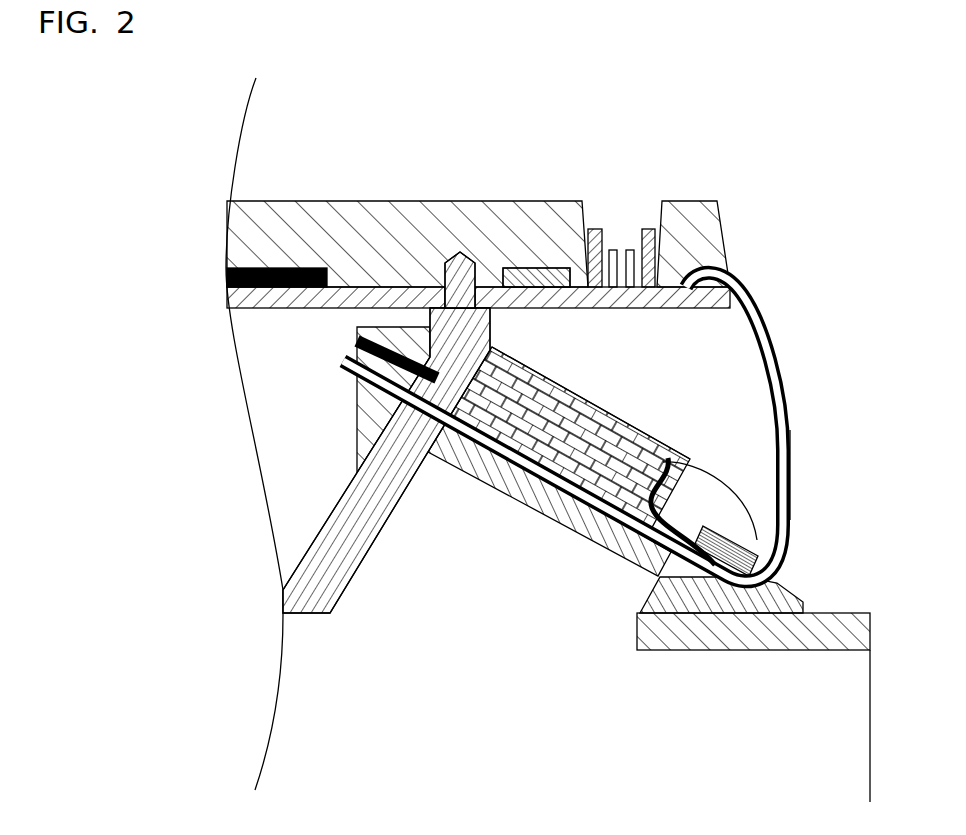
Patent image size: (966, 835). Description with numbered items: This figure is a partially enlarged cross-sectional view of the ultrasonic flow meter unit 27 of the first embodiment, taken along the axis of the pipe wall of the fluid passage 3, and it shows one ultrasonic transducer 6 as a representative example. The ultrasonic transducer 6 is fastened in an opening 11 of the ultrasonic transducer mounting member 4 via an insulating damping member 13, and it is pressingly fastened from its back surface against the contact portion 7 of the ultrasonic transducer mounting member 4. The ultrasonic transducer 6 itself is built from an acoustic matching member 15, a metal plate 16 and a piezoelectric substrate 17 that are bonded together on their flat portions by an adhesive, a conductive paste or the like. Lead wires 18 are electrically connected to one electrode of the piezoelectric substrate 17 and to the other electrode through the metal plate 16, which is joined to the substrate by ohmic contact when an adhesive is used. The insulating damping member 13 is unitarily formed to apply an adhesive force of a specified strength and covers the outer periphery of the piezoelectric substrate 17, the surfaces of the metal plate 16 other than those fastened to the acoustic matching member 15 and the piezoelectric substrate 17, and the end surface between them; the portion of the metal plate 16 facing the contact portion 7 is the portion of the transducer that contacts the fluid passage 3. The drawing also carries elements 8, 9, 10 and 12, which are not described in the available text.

The fluid passage 3 is at (870, 627).
The ultrasonic transducer mounting member 4 is at (380, 447).
The ultrasonic transducer 6 is at (667, 376).
The contact portion 7 is at (680, 587).
The light shielding layer 8 is at (327, 285).
The positioning pin 9 is at (462, 268).
The mounting plate 10 is at (380, 292).
The opening 11 is at (513, 542).
The adhesive layer 12 is at (375, 337).
The insulating damping member 13 is at (700, 228).
The acoustic matching member 15 is at (585, 527).
The metal plate 16 is at (377, 380).
The piezoelectric substrate 17 is at (700, 462).
The lead wires 18 is at (773, 537).
The ultrasonic flow meter unit 27 is at (718, 180).